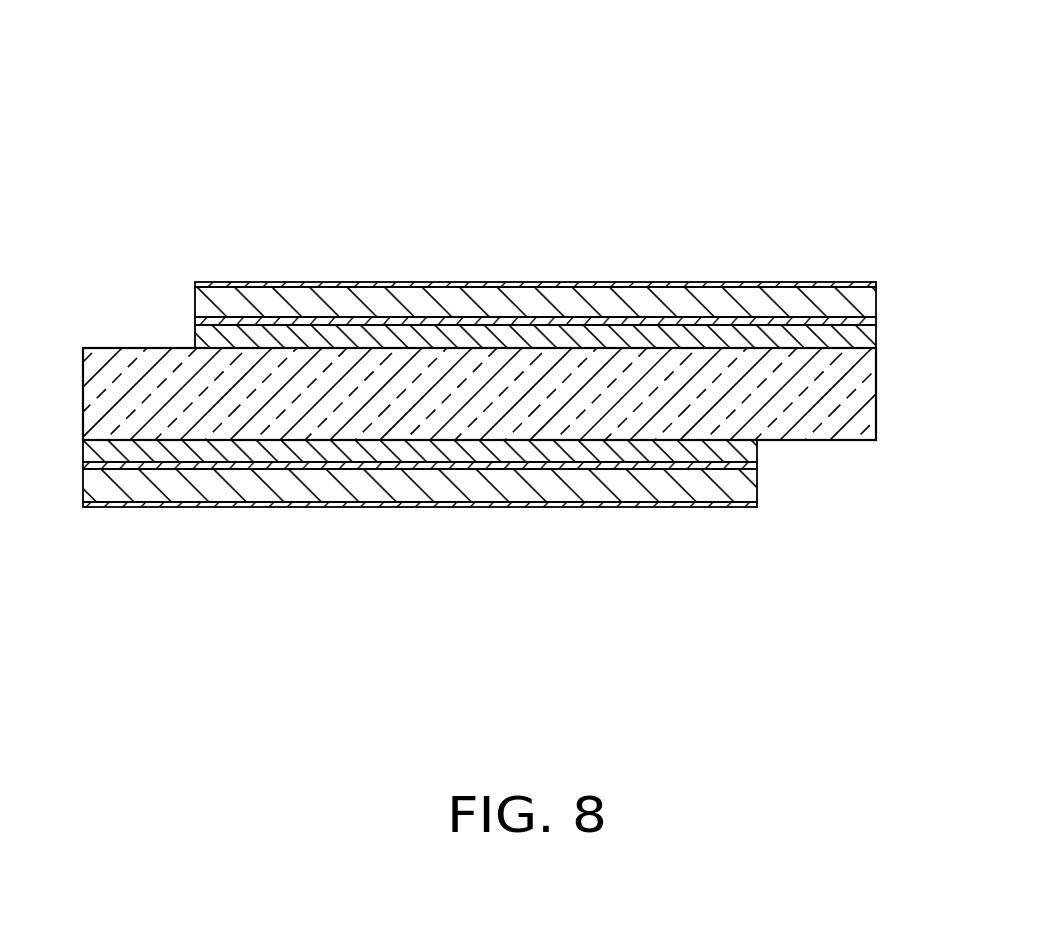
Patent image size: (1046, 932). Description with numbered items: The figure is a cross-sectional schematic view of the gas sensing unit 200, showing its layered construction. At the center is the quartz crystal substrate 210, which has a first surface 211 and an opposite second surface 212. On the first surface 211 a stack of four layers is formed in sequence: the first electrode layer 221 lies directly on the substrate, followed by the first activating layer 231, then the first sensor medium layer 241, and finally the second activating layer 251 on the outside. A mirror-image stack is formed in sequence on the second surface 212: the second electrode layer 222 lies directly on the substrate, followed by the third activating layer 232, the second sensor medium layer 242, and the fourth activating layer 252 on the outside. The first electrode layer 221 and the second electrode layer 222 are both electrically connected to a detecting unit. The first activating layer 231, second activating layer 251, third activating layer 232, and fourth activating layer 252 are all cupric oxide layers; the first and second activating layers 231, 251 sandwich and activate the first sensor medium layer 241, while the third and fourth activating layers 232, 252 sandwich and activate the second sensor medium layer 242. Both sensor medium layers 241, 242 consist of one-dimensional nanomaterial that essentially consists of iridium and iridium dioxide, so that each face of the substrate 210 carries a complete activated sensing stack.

The gas sensing unit 200 is at (459, 88).
The quartz crystal substrate 210 is at (873, 405).
The first surface 211 is at (141, 340).
The second surface 212 is at (882, 450).
The first electrode layer 221 is at (860, 340).
The second electrode layer 222 is at (745, 453).
The first activating layer 231 is at (870, 322).
The third activating layer 232 is at (752, 467).
The first sensor medium layer 241 is at (871, 307).
The second sensor medium layer 242 is at (525, 492).
The second activating layer 251 is at (875, 282).
The fourth activating layer 252 is at (668, 503).